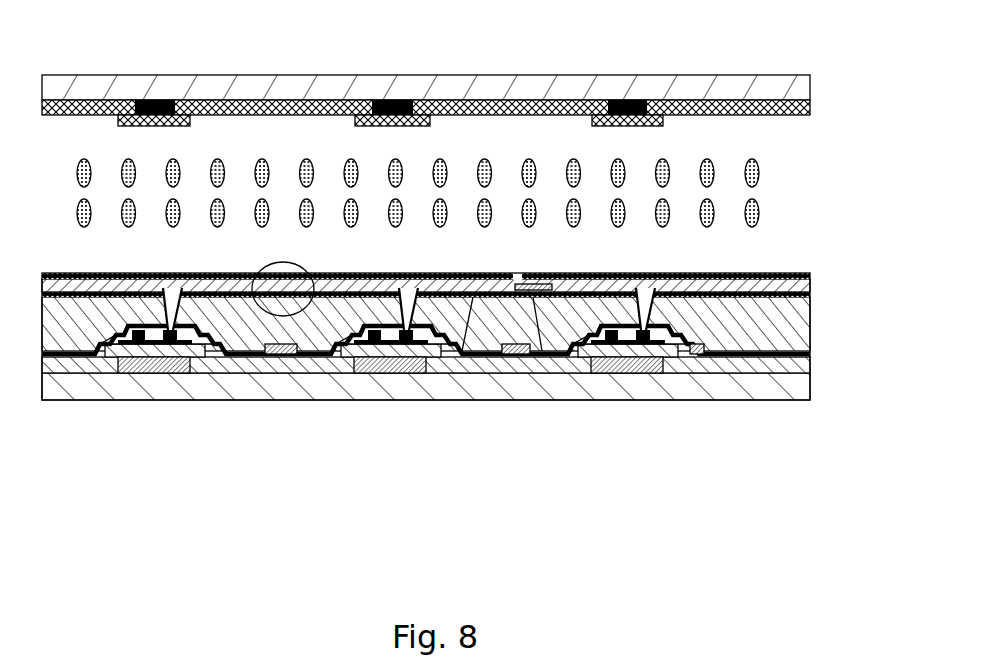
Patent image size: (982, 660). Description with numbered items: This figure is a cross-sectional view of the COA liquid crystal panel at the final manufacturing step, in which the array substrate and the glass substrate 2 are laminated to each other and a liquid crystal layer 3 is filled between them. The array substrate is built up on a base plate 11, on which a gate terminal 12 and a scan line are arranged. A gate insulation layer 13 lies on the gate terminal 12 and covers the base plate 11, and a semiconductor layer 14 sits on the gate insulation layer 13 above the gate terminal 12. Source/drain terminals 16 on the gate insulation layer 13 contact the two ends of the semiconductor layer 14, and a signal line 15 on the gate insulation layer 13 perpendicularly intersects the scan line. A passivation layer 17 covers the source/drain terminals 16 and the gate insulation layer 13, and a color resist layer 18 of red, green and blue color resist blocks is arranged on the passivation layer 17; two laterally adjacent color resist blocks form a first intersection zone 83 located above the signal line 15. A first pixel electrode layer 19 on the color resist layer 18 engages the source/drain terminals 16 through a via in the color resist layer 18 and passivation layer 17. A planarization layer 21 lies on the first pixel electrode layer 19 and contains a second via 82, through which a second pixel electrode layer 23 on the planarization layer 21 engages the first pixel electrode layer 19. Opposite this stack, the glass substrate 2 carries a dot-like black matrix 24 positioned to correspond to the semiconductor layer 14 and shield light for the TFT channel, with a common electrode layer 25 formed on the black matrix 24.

The glass substrate 2 is at (704, 93).
The dot-like black matrix 24 is at (631, 101).
The common electrode layer 25 is at (576, 101).
The liquid crystal layer 3 is at (756, 174).
The base plate 11 is at (772, 382).
The gate terminal 12 is at (658, 366).
The gate insulation layer 13 is at (727, 365).
The semiconductor layer 14 is at (617, 356).
The signal line 15 is at (522, 354).
The source/drain terminals 16 is at (575, 345).
The passivation layer 17 is at (790, 352).
The color resist layer 18 is at (789, 317).
The first pixel electrode layer 19 is at (476, 297).
The planarization layer 21 is at (405, 342).
The second pixel electrode layer 23 is at (282, 318).
The second via 82 is at (304, 300).
The first intersection zone 83 is at (249, 323).